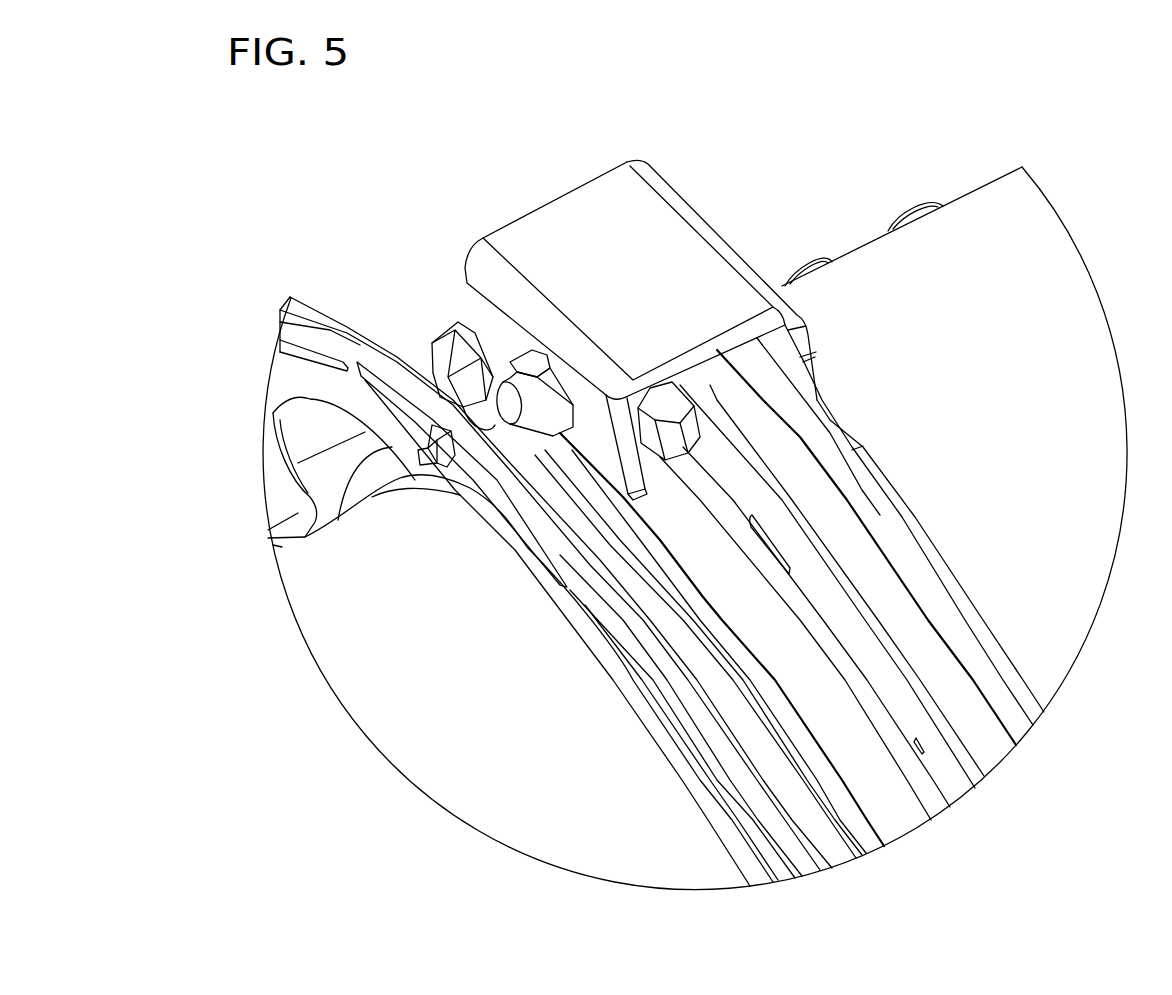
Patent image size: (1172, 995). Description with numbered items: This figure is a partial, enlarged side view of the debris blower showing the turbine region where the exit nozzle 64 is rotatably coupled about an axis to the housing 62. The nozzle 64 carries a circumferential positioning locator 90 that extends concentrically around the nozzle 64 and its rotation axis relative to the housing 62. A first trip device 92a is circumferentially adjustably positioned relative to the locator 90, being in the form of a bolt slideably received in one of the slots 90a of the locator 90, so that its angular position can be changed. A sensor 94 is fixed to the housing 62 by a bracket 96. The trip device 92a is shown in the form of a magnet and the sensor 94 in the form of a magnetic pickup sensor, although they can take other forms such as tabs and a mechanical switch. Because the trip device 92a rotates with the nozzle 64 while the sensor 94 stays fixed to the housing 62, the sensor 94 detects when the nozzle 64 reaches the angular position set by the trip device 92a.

The housing 62 is at (873, 297).
The exit nozzle 64 is at (378, 702).
The circumferential positioning locator 90 is at (342, 325).
The slots 90a is at (287, 337).
The first trip device 92a is at (436, 470).
The sensor 94 is at (524, 400).
The bracket 96 is at (543, 225).